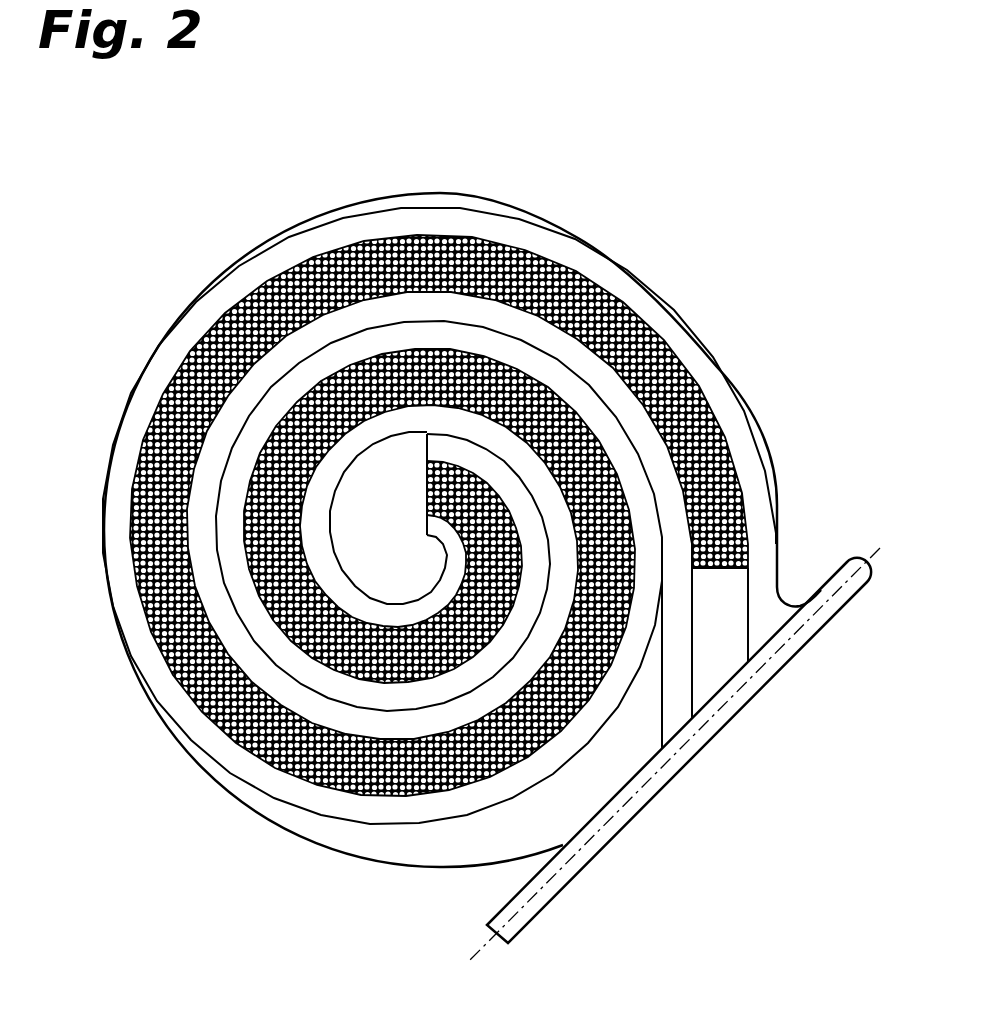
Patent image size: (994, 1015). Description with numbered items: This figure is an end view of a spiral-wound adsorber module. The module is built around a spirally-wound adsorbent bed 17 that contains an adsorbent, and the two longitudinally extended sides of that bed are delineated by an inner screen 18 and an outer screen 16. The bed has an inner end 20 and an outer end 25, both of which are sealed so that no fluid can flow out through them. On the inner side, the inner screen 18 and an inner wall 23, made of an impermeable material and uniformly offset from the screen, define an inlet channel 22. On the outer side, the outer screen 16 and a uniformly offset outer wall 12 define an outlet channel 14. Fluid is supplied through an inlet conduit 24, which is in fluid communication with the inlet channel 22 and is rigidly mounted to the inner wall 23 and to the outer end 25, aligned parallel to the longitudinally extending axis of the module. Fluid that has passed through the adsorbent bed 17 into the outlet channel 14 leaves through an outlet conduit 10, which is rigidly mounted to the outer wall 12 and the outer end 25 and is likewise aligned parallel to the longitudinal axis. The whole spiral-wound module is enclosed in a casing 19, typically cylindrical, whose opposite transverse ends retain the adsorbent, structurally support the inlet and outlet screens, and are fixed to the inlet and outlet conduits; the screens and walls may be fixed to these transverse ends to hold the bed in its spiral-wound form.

The outlet conduit 10 is at (855, 598).
The outer wall 12 is at (707, 353).
The outlet channel 14 is at (617, 283).
The outer screen 16 is at (490, 240).
The adsorbent bed 17 is at (420, 262).
The inner screen 18 is at (320, 313).
The casing 19 is at (323, 849).
The inner end 20 is at (427, 514).
The inlet channel 22 is at (670, 502).
The inner wall 23 is at (663, 538).
The inlet conduit 24 is at (653, 797).
The outer end 25 is at (707, 568).